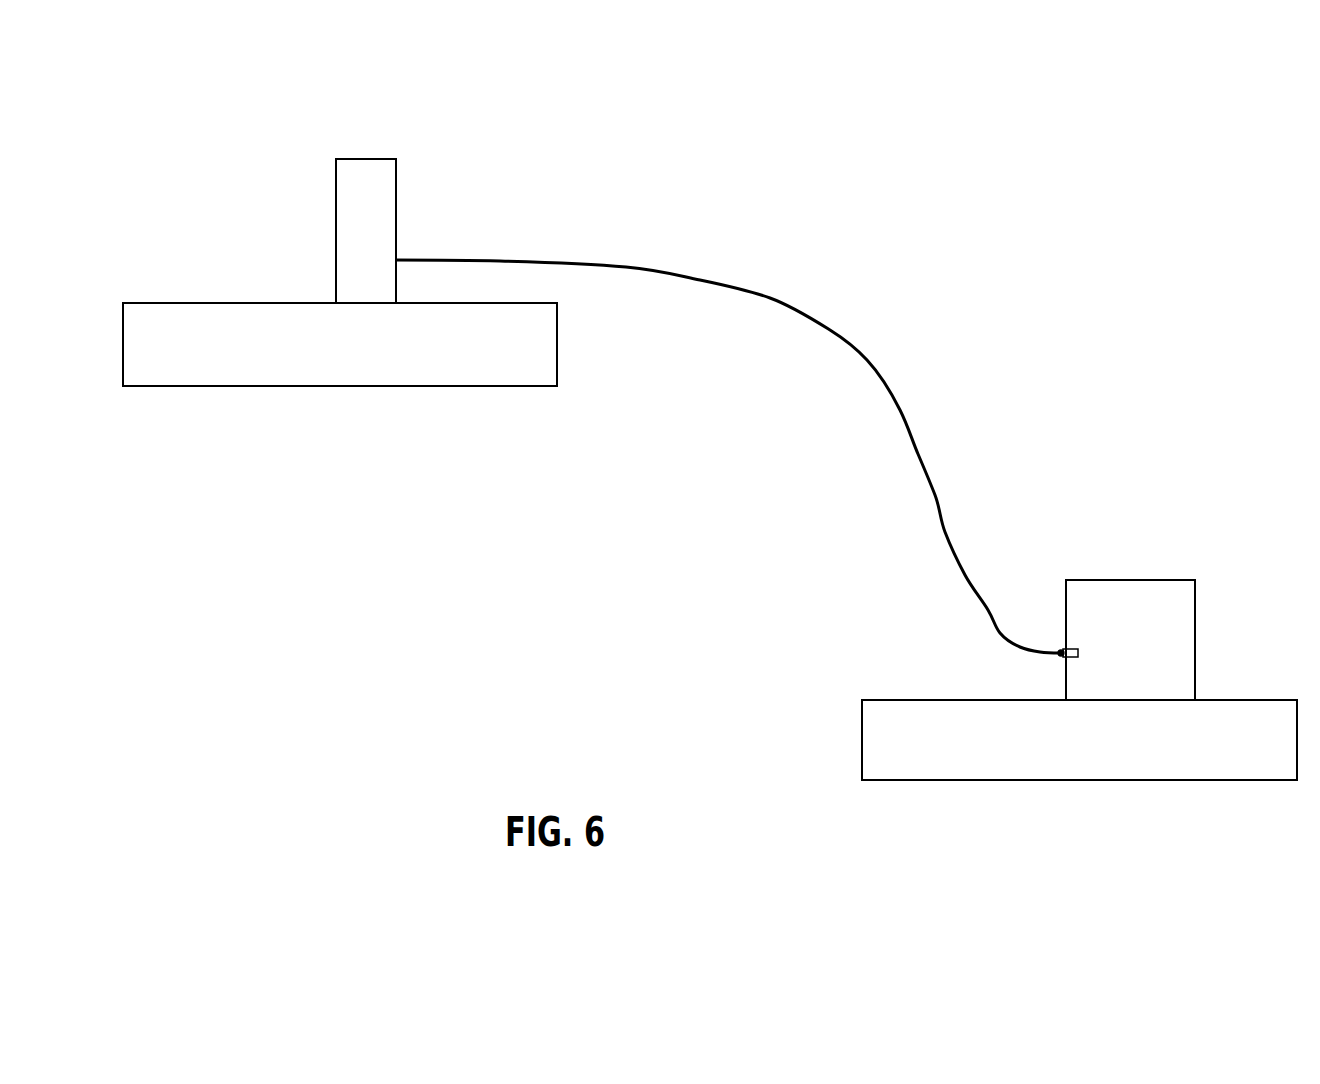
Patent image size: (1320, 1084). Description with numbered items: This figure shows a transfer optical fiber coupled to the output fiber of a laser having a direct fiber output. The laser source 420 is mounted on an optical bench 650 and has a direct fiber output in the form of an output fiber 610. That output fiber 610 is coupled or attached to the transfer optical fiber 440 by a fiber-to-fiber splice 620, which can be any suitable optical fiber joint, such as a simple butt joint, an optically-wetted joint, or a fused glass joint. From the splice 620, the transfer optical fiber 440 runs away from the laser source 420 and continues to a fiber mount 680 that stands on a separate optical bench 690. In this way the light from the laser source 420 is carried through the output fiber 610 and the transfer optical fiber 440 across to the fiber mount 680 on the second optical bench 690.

The transfer optical fiber 440 is at (862, 292).
The laser source 420 is at (1152, 580).
The output fiber 610 is at (1072, 647).
The fiber-to-fiber splice 620 is at (1052, 659).
The optical bench 650 is at (862, 741).
The fiber mount 680 is at (373, 157).
The optical bench 690 is at (208, 382).